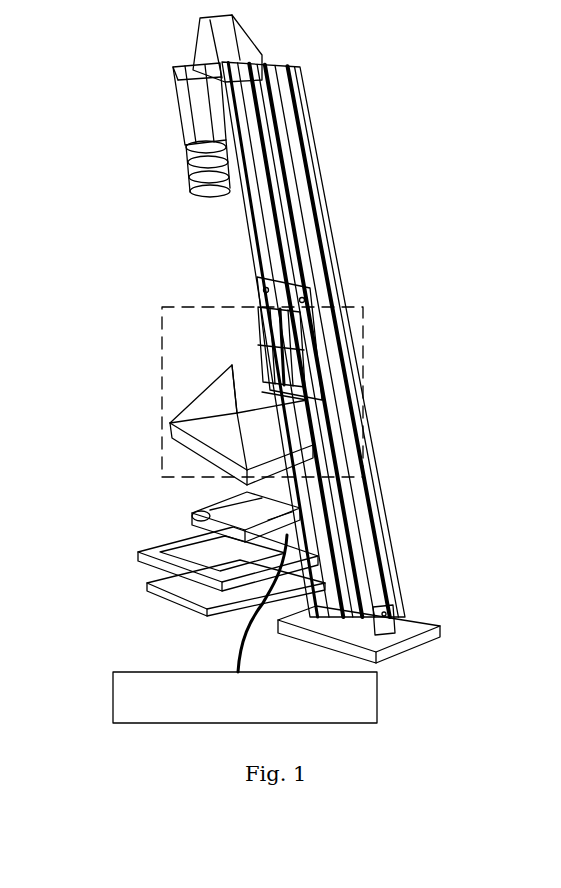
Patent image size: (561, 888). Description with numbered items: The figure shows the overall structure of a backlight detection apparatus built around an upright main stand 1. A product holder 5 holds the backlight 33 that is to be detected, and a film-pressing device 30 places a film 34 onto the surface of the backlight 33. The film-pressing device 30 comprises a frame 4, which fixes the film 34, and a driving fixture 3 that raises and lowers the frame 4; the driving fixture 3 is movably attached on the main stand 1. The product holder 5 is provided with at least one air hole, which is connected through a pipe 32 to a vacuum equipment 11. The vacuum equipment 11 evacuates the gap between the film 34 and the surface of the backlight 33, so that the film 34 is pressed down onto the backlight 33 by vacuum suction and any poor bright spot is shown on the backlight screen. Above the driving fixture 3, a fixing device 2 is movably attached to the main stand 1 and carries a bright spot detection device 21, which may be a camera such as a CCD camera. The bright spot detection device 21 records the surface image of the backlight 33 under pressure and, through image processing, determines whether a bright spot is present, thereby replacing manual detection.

The main stand 1 is at (327, 197).
The fixing device 2 is at (173, 75).
The bright spot detection device 21 is at (193, 167).
The driving fixture 3 is at (322, 340).
The film-pressing device 30 is at (367, 362).
The frame 4 is at (247, 388).
The film 34 is at (235, 435).
The product holder 5 is at (215, 505).
The backlight 33 is at (200, 527).
The pipe 32 is at (237, 637).
The vacuum equipment 11 is at (377, 697).